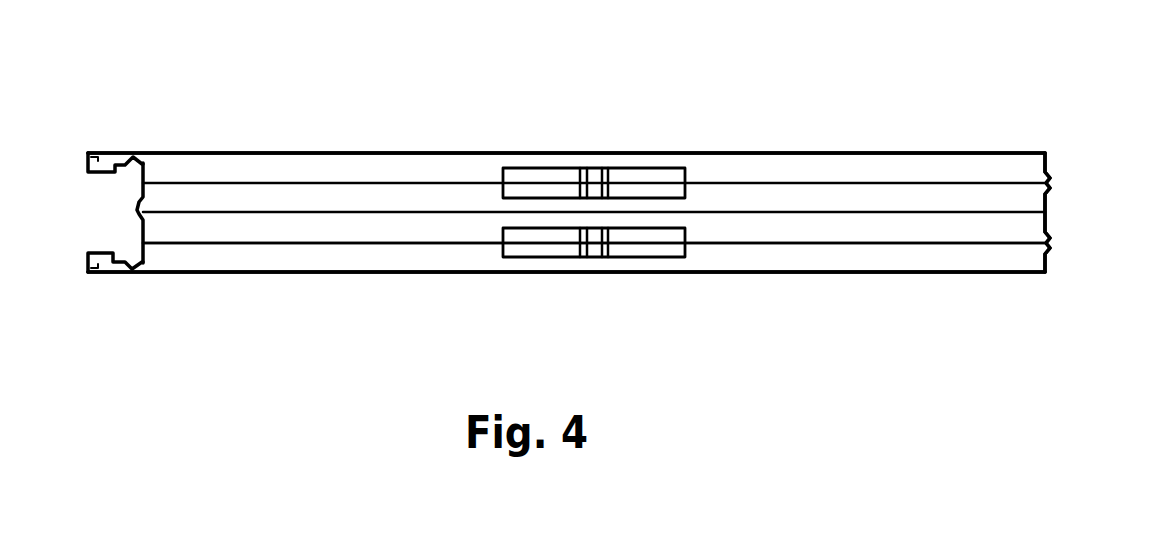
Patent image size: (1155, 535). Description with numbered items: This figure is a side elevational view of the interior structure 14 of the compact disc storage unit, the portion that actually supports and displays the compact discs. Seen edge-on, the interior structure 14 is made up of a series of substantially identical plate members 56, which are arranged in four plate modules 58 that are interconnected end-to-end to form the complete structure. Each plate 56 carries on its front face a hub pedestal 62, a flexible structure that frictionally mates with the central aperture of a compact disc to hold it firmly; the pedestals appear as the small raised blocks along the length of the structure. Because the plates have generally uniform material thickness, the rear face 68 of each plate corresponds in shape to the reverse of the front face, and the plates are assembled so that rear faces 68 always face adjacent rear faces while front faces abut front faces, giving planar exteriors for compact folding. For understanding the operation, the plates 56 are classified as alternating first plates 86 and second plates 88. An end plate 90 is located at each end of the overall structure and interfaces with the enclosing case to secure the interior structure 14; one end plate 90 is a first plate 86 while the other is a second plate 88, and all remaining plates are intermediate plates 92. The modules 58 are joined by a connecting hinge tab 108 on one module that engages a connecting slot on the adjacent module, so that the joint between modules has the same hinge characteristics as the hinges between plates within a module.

The interior structure 14 is at (817, 74).
The plate member 56 is at (1047, 255).
The four plate module 58 is at (820, 301).
The hub pedestal 62 is at (608, 190).
The rear face 68 is at (455, 153).
The first plate 86 is at (205, 158).
The second plate 88 is at (305, 197).
The end plate 90 is at (594, 201).
The intermediate plate 92 is at (170, 227).
The connecting hinge tab 108 is at (108, 153).